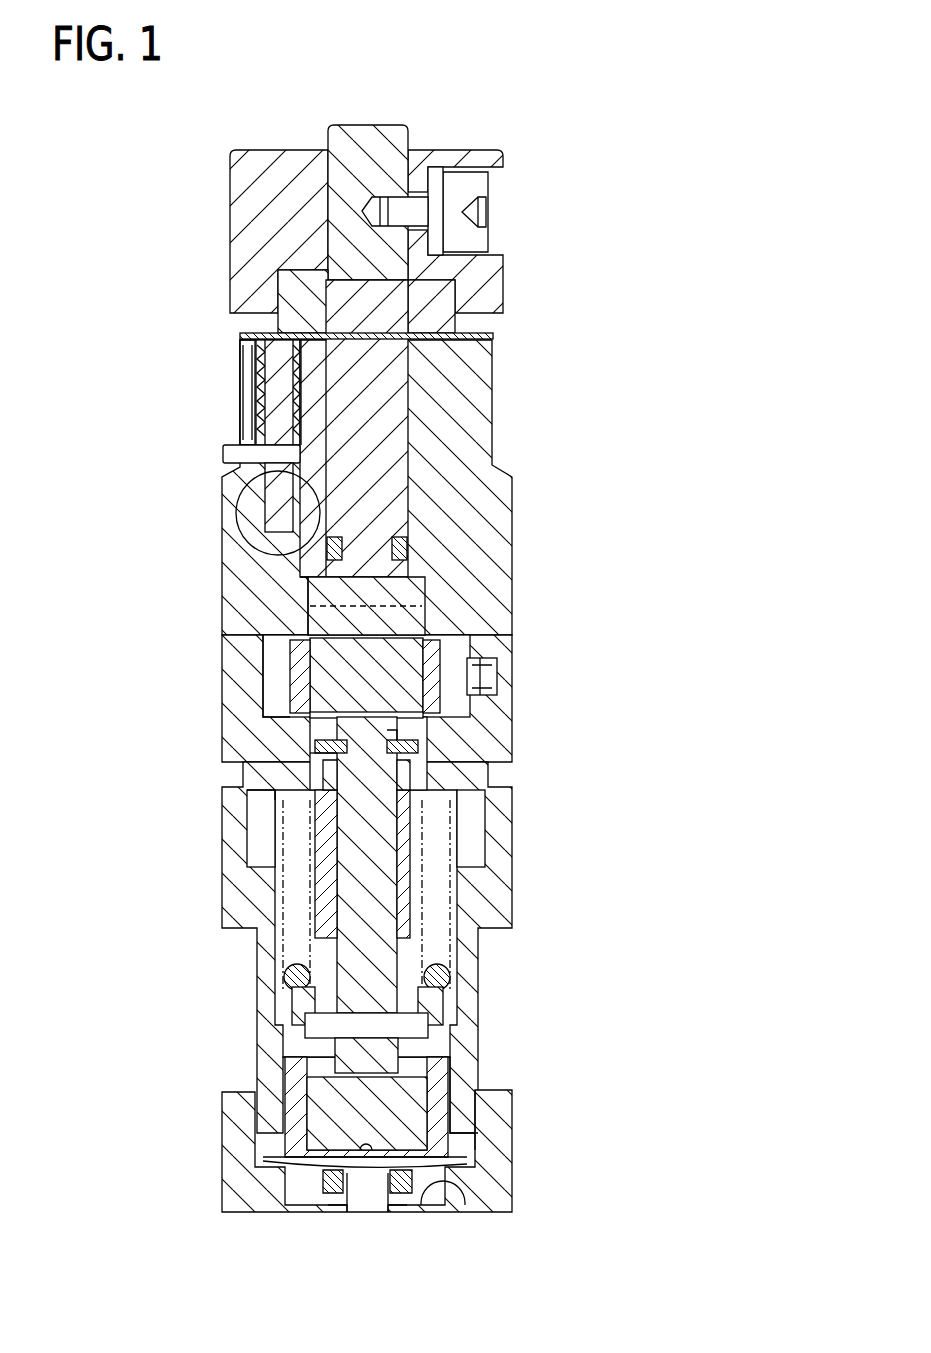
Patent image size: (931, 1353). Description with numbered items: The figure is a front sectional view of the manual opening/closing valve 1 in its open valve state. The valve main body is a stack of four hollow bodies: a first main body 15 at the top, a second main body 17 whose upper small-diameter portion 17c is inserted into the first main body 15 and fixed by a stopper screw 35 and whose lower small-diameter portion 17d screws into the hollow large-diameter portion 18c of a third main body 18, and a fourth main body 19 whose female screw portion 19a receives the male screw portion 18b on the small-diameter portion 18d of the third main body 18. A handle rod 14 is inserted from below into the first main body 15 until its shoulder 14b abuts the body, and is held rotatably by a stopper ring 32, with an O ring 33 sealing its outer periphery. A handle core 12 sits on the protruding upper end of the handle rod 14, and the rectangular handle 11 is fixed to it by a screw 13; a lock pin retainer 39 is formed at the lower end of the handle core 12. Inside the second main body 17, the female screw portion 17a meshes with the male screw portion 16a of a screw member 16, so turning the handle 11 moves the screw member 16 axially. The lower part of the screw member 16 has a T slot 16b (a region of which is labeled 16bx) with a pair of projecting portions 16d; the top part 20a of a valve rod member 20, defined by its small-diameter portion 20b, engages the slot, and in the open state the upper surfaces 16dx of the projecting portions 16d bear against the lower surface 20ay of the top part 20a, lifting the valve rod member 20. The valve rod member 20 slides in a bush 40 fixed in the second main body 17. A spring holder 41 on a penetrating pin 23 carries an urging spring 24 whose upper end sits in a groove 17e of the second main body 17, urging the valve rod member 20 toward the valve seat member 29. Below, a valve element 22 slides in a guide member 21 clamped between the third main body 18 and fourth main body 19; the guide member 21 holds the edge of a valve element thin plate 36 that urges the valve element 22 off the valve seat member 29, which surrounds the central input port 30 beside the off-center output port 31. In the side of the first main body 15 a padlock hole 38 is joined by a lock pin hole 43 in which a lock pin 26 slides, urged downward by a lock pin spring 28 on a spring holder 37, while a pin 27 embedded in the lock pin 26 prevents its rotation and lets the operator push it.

The manual opening/closing valve 1 is at (541, 143).
The handle 11 is at (268, 152).
The handle core 12 is at (362, 138).
The screw 13 is at (490, 182).
The handle rod 14 is at (400, 385).
The shoulder 14b is at (305, 620).
The first main body 15 is at (480, 436).
The screw member 16 is at (420, 580).
The male screw portion 16a is at (400, 650).
The T slot 16b is at (432, 673).
The seal ring portion 16bx is at (313, 753).
The projecting portions 16d is at (410, 748).
The upper surfaces 16dx is at (398, 745).
The second main body 17 is at (228, 735).
The female screw portion 17a is at (300, 688).
The upper small-diameter portion 17c is at (262, 650).
The lower small-diameter portion 17d is at (250, 797).
The groove 17e is at (262, 812).
The third main body 18 is at (500, 890).
The male screw portion 18b is at (440, 1075).
The hollow large-diameter portion 18c is at (470, 830).
The small-diameter portion 18d is at (470, 1000).
The fourth main body 19 is at (500, 1170).
The female screw portion 19a is at (475, 1113).
The valve rod member 20 is at (380, 855).
The top part 20a is at (380, 716).
The lower surface 20ay is at (330, 760).
The small-diameter portion 20b is at (400, 768).
The guide member 21 is at (370, 1055).
The valve element 22 is at (400, 1128).
The penetrating pin 23 is at (350, 1030).
The urging spring 24 is at (283, 863).
The lock pin 26 is at (258, 498).
The pin 27 is at (230, 452).
The lock pin spring 28 is at (262, 372).
The valve seat member 29 is at (330, 1183).
The input port 30 is at (375, 1212).
The output port 31 is at (430, 1212).
The stopper ring 32 is at (420, 336).
The O ring 33 is at (410, 548).
The stopper screw 35 is at (482, 667).
The valve element thin plate 36 is at (300, 1160).
The spring holder 37 is at (243, 333).
The padlock hole 38 is at (262, 540).
The lock pin retainer 39 is at (285, 295).
The bush 40 is at (395, 965).
The spring holder 41 is at (298, 1005).
The lock pin hole 43 is at (258, 400).